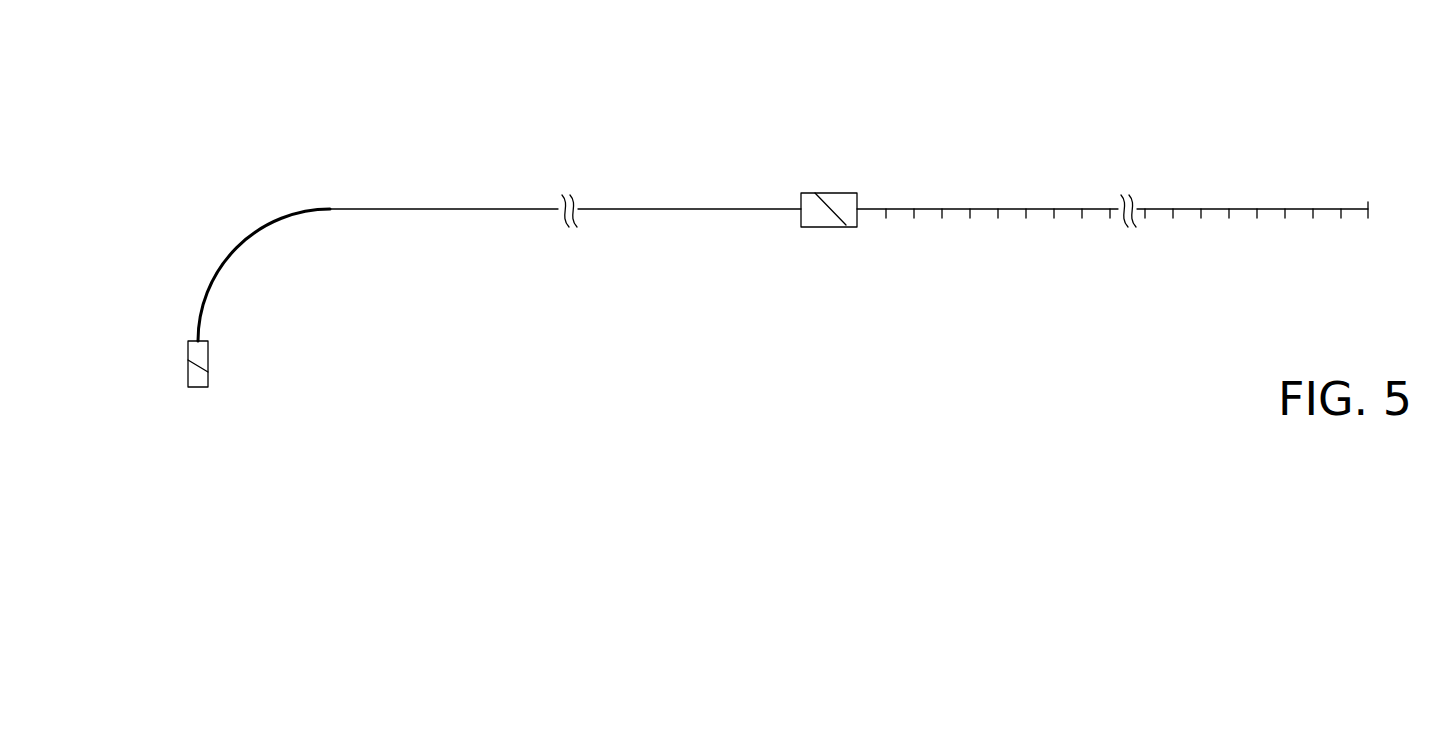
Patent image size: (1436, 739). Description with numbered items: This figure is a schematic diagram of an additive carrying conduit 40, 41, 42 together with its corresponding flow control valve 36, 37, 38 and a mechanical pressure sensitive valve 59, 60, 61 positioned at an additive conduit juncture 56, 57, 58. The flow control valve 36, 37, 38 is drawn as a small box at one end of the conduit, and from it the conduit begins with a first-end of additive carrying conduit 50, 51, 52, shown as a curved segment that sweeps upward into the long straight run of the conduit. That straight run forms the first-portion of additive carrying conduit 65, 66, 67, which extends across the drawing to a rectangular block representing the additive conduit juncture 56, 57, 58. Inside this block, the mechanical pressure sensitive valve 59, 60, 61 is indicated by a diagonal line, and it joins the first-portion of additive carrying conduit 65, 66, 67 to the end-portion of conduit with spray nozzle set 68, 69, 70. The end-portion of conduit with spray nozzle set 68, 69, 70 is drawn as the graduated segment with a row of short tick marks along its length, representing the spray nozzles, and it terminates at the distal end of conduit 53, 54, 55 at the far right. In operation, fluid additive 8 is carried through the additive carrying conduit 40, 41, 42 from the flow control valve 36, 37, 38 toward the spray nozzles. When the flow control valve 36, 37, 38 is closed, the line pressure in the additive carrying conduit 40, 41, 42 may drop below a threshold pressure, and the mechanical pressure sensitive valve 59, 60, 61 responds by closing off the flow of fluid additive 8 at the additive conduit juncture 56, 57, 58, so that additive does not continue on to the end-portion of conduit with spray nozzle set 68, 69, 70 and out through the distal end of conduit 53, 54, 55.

The fluid additive 8 is at (198, 387).
The flow control valve 36 is at (271, 364).
The flow control valve 37 is at (271, 364).
The flow control valve 38 is at (200, 358).
The shaft 40 is at (689, 151).
The additive carrying conduit 41 is at (689, 151).
The additive carrying conduit 42 is at (750, 192).
The first-end of additive carrying conduit 50 is at (210, 275).
The first-end of additive carrying conduit 51 is at (210, 275).
The first-end of additive carrying conduit 52 is at (198, 340).
The distal end of conduit 53 is at (1341, 157).
The distal end of conduit 54 is at (1341, 157).
The distal end of conduit 55 is at (1367, 205).
The additive conduit juncture 56 is at (886, 179).
The additive conduit juncture 57 is at (886, 179).
The additive conduit juncture 58 is at (822, 193).
The mechanical pressure sensitive valve 59 is at (893, 235).
The mechanical pressure sensitive valve 60 is at (893, 235).
The mechanical pressure sensitive valve 61 is at (816, 222).
The first-portion of additive carrying conduit 65 is at (453, 179).
The first-portion of additive carrying conduit 66 is at (453, 179).
The first-portion of additive carrying conduit 67 is at (441, 208).
The end-portion of conduit with spray nozzle set 68 is at (1112, 179).
The end-portion of conduit with spray nozzle set 69 is at (1112, 179).
The end-portion of conduit with spray nozzle set 70 is at (1207, 208).